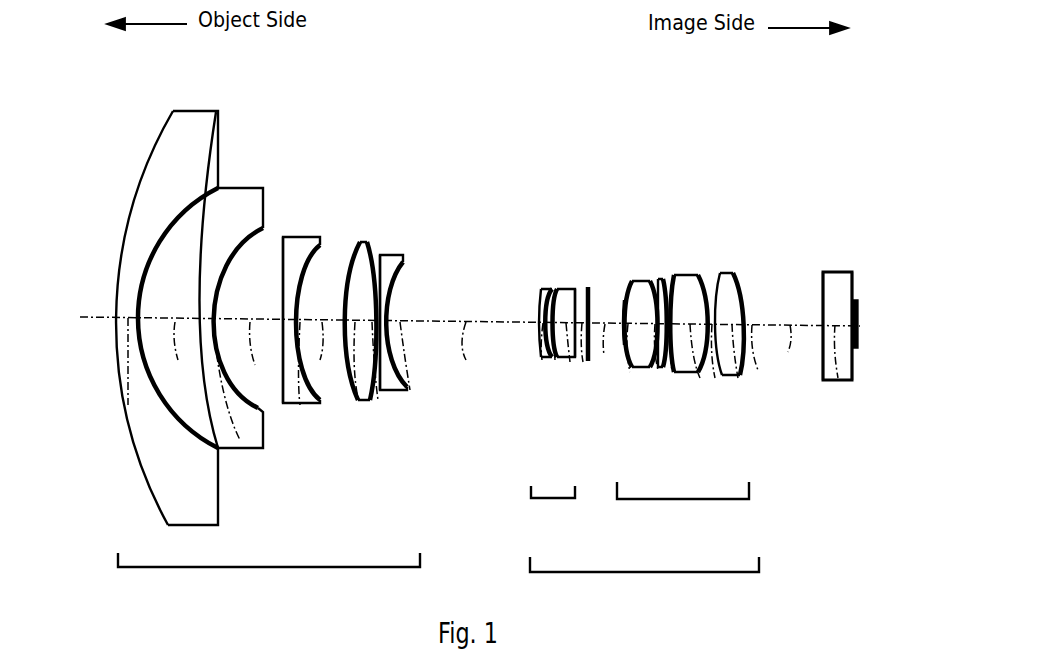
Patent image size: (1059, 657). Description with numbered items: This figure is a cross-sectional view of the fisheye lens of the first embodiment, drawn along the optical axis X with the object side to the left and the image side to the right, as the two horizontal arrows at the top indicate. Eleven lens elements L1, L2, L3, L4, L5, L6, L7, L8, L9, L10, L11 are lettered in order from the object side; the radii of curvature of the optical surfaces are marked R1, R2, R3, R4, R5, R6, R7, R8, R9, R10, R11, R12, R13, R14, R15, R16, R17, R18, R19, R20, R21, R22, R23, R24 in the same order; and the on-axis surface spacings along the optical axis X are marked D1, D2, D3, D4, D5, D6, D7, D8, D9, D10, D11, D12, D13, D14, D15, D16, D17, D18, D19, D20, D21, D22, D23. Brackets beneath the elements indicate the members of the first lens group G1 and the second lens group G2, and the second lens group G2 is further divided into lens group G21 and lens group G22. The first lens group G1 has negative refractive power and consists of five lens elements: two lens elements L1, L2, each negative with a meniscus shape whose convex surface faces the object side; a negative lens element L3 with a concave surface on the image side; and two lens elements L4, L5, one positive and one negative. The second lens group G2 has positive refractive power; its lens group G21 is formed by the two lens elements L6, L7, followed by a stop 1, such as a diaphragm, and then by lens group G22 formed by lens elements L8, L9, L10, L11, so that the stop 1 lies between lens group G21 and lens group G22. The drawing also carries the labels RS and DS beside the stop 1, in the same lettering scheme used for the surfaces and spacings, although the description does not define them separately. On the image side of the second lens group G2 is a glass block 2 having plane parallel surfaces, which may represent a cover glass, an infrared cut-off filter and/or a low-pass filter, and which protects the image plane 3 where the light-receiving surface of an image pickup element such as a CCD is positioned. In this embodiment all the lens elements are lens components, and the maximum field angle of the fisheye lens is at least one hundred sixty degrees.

The optical axis X is at (85, 320).
The stop 1 is at (590, 287).
The glass block 2 is at (833, 286).
The image plane 3 is at (858, 302).
The lens element L1 is at (179, 284).
The lens element L2 is at (245, 280).
The lens element L3 is at (307, 287).
The lens element L4 is at (362, 286).
The lens element L5 is at (418, 281).
The lens element L6 is at (517, 284).
The lens element L7 is at (574, 276).
The lens element L8 is at (657, 274).
The lens element L9 is at (689, 273).
The lens element L10 is at (690, 275).
The lens element L11 is at (755, 291).
The radius of curvature R1 is at (165, 130).
The radius of curvature R2 is at (213, 112).
The radius of curvature R3 is at (228, 178).
The radius of curvature R4 is at (261, 188).
The radius of curvature R5 is at (282, 240).
The radius of curvature R6 is at (318, 242).
The radius of curvature R7 is at (352, 245).
The radius of curvature R8 is at (370, 252).
The radius of curvature R9 is at (405, 258).
The radius of curvature R10 is at (398, 294).
The radius of curvature R11 is at (540, 302).
The radius of curvature R12 is at (549, 293).
The radius of curvature R13 is at (556, 292).
The radius of curvature R14 is at (573, 292).
The stop surface RS is at (590, 318).
The radius of curvature R15 is at (590, 296).
The radius of curvature R16 is at (622, 295).
The radius of curvature R17 is at (634, 278).
The radius of curvature R18 is at (653, 282).
The radius of curvature R19 is at (662, 290).
The radius of curvature R20 is at (698, 285).
The radius of curvature R21 is at (740, 280).
The radius of curvature R22 is at (743, 300).
The radius of curvature R23 is at (823, 272).
The radius of curvature R24 is at (853, 272).
The on-axis surface spacing D1 is at (128, 405).
The on-axis surface spacing D2 is at (178, 360).
The on-axis surface spacing D3 is at (240, 440).
The on-axis surface spacing D4 is at (255, 365).
The on-axis surface spacing D5 is at (300, 405).
The on-axis surface spacing D6 is at (320, 360).
The on-axis surface spacing D7 is at (358, 398).
The on-axis surface spacing D8 is at (378, 400).
The on-axis surface spacing D9 is at (410, 390).
The on-axis surface spacing D10 is at (466, 360).
The on-axis surface spacing D11 is at (542, 360).
The on-axis surface spacing D12 is at (555, 360).
The on-axis surface spacing D13 is at (570, 362).
The on-axis surface spacing D14 is at (583, 362).
The stop distance DS is at (604, 355).
The on-axis surface spacing D15 is at (630, 372).
The on-axis surface spacing D16 is at (658, 370).
The on-axis surface spacing D17 is at (672, 372).
The on-axis surface spacing D18 is at (700, 378).
The on-axis surface spacing D19 is at (715, 378).
The on-axis surface spacing D20 is at (738, 378).
The on-axis surface spacing D21 is at (758, 370).
The on-axis surface spacing D22 is at (788, 352).
The on-axis surface spacing D23 is at (838, 378).
The first lens group G1 is at (269, 577).
The second lens group G2 is at (644, 581).
The lens group G21 is at (553, 511).
The lens group G22 is at (683, 507).